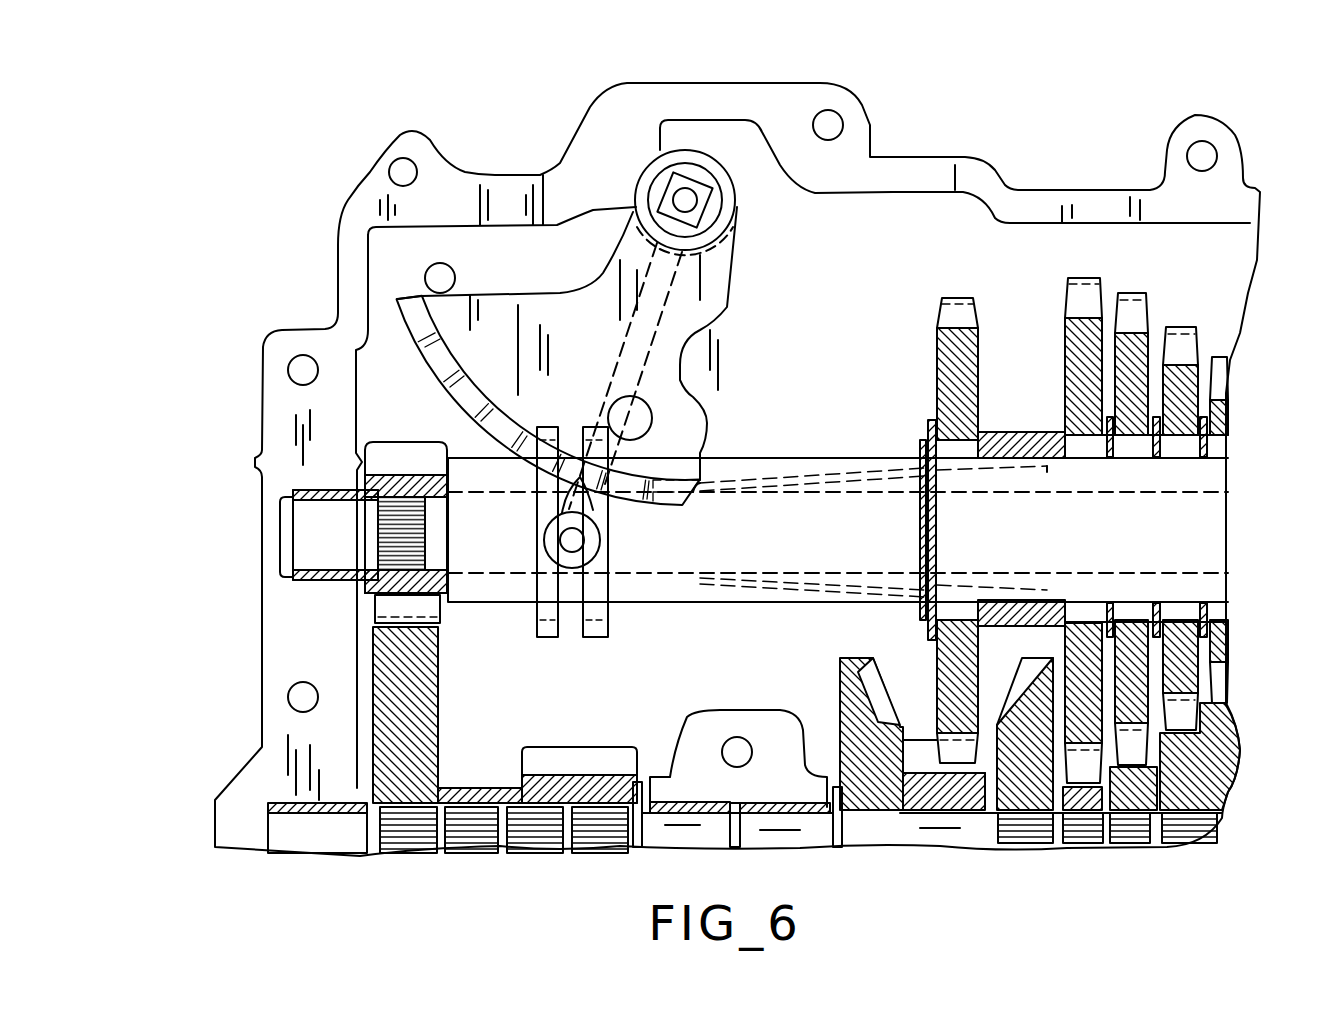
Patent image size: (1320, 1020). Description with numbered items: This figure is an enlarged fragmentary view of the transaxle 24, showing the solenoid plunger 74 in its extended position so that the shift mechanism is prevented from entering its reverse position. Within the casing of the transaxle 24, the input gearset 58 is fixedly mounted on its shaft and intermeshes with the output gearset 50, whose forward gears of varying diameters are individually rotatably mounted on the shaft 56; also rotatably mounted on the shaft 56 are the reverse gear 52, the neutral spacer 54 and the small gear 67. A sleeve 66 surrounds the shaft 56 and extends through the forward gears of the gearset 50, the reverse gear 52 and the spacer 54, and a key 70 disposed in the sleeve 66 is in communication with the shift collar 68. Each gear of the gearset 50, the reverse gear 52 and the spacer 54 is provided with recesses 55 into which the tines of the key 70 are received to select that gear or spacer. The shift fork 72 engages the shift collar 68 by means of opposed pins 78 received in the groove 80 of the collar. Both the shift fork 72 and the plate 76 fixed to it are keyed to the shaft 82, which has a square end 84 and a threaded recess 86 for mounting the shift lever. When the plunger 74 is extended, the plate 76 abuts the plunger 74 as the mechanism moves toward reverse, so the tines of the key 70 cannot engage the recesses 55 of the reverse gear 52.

The transaxle 24 is at (1030, 130).
The output gearset 50 is at (1128, 303).
The reverse gear 52 is at (955, 312).
The neutral spacer 54 is at (993, 447).
The recesses 55 is at (957, 440).
The shaft 56 is at (312, 533).
The input gearset 58 is at (1220, 760).
The sleeve 66 is at (778, 595).
The small gear 67 is at (392, 450).
The shift collar 68 is at (597, 637).
The key 70 is at (835, 473).
The shift fork 72 is at (660, 325).
The plunger 74 is at (433, 280).
The plate 76 is at (717, 273).
The opposed pins 78 is at (587, 540).
The groove 80 is at (573, 617).
The shaft 82 is at (717, 205).
The square end 84 is at (680, 177).
The threaded recess 86 is at (688, 197).